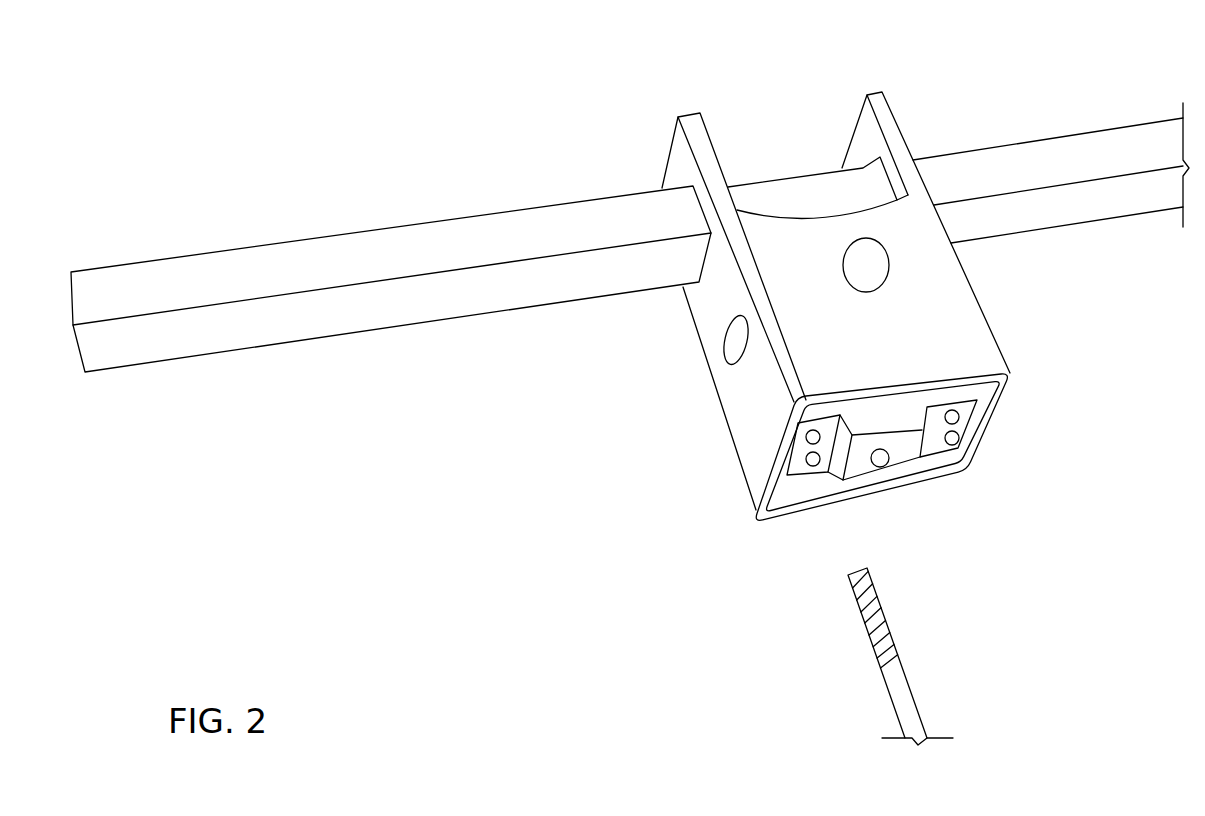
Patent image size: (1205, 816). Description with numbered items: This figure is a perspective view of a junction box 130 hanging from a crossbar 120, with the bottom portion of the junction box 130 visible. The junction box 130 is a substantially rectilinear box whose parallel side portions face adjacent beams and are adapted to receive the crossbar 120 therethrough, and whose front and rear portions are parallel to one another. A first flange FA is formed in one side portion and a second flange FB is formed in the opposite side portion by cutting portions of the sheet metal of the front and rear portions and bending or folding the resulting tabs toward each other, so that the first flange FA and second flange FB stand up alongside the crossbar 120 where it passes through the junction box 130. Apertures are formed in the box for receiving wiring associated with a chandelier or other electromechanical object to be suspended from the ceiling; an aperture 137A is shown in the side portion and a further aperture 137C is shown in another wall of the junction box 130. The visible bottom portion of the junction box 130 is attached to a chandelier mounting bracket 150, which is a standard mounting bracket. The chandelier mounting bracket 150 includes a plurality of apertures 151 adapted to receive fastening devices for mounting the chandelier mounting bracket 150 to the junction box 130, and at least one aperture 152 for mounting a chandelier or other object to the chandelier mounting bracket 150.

The crossbar 120 is at (280, 267).
The junction box 130 is at (995, 293).
The aperture 137A is at (722, 340).
The aperture 137C is at (852, 280).
The chandelier mounting bracket 150 is at (900, 462).
The apertures 151 is at (808, 466).
The aperture 152 is at (880, 467).
The first flange FA is at (687, 115).
The second flange FB is at (868, 93).